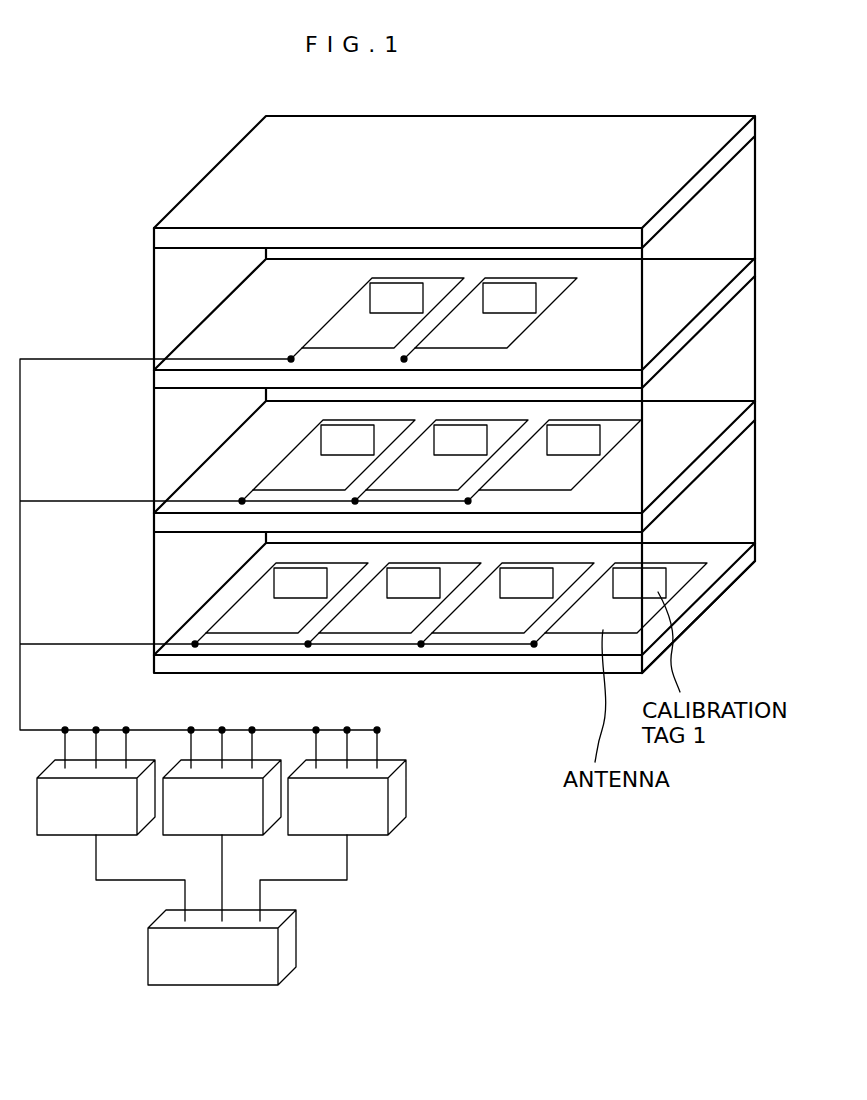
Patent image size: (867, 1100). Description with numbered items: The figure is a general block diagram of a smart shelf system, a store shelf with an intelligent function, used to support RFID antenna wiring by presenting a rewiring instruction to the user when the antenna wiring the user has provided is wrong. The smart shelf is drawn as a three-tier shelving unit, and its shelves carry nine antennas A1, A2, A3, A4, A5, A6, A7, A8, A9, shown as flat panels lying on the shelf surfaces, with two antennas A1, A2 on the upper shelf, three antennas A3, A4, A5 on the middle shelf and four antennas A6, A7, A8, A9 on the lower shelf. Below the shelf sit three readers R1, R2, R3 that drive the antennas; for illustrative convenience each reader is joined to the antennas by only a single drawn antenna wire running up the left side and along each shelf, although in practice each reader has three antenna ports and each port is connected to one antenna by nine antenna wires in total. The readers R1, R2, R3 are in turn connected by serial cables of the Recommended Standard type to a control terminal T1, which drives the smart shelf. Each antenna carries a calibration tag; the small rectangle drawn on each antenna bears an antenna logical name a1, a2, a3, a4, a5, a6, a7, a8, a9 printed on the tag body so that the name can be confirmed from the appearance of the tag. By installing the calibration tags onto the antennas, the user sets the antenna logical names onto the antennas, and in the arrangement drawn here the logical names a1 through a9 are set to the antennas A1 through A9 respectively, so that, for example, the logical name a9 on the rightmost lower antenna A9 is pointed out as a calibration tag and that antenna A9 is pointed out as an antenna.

The antenna A1 is at (376, 320).
The antenna A2 is at (489, 320).
The antenna A3 is at (327, 462).
The antenna A4 is at (440, 462).
The antenna A5 is at (553, 462).
The antenna A6 is at (280, 605).
The antenna A7 is at (393, 605).
The antenna A8 is at (506, 605).
The antenna A9 is at (619, 605).
The antenna logical name a1 is at (396, 298).
The antenna logical name a2 is at (509, 298).
The antenna logical name a3 is at (347, 440).
The antenna logical name a4 is at (460, 440).
The antenna logical name a5 is at (573, 440).
The antenna logical name a6 is at (300, 583).
The antenna logical name a7 is at (413, 583).
The antenna logical name a8 is at (526, 583).
The antenna logical name a9 is at (639, 583).
The reader R1 is at (57, 835).
The reader R2 is at (243, 834).
The reader R3 is at (378, 834).
The control terminal T1 is at (217, 985).